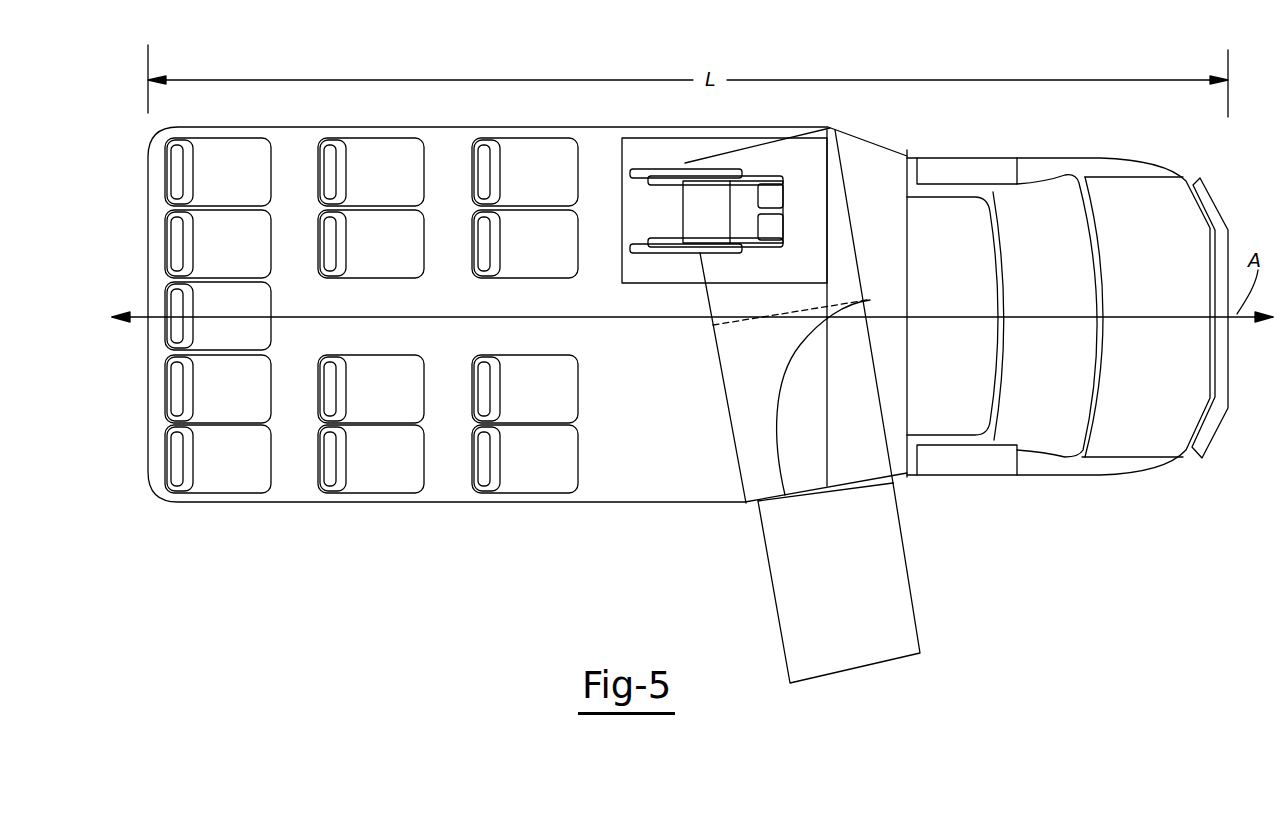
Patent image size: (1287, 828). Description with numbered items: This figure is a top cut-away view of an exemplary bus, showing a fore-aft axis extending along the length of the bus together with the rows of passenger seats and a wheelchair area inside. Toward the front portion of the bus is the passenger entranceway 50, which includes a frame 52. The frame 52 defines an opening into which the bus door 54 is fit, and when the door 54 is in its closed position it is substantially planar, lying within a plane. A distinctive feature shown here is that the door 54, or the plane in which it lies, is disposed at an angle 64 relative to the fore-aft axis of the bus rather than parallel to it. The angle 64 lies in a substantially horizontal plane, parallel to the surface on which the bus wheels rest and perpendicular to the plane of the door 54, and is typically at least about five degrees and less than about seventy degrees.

The passenger entranceway 50 is at (797, 532).
The frame 52 is at (746, 503).
The bus door 54 is at (847, 507).
The angle 64 is at (771, 400).